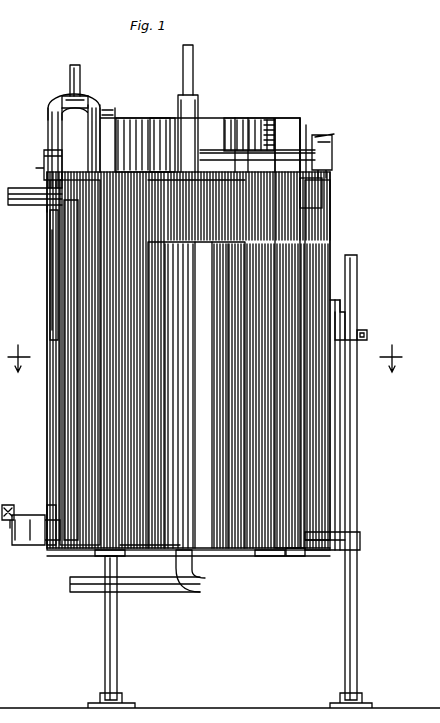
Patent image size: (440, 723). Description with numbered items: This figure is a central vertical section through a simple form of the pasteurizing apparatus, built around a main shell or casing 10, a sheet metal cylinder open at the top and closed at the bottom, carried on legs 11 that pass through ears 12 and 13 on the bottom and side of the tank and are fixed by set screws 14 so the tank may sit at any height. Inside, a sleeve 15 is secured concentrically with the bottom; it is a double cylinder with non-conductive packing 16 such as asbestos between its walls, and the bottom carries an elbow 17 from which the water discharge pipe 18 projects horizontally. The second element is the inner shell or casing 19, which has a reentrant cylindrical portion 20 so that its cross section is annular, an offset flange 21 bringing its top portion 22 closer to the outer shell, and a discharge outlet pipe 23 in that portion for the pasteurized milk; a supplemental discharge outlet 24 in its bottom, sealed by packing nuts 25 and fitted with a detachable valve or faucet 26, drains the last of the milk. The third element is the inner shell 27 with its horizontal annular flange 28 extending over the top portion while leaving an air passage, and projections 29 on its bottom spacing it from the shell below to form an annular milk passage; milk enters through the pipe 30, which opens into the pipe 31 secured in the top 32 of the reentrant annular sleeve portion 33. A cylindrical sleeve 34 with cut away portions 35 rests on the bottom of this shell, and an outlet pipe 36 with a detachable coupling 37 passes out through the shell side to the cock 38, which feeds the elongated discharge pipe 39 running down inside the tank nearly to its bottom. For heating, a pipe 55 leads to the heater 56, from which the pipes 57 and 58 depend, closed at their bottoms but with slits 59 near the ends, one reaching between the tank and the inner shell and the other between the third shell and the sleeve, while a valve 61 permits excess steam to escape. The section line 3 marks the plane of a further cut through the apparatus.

The section line 3- 3 is at (204, 358).
The main shell or casing 10 is at (330, 302).
The legs 11 is at (118, 646).
The ear 12 is at (361, 541).
The ear 13 is at (348, 326).
The set screws 14 is at (368, 336).
The sleeve 15 is at (212, 383).
The non-conductive packing 16 is at (164, 243).
The elbow 17 is at (199, 574).
The water discharge pipe 18 is at (152, 591).
The inner shell or casing 19 is at (70, 397).
The reentrant cylindrical portion 20 is at (182, 216).
The offset flange 21 is at (314, 212).
The top portion 22 is at (312, 189).
The discharge outlet pipe 23 is at (38, 206).
The supplemental discharge outlet 24 is at (50, 547).
The packing nuts 25 is at (48, 505).
The detachable valve or faucet 26 is at (8, 518).
The inner shell 27 is at (312, 398).
The horizontal annular flange 28 is at (45, 161).
The projections 29 is at (265, 551).
The milk inlet pipe 30 is at (194, 78).
The pipe 31 is at (199, 110).
The top 32 is at (175, 168).
The reentrant annular sleeve portion 33 is at (120, 172).
The cylindrical sleeve 34 is at (243, 125).
The cut away portions 35 is at (295, 553).
The outlet pipes 36 is at (247, 134).
The detachable coupling 37 is at (302, 121).
The cock 38 is at (334, 146).
The elongated discharge pipe 39 is at (330, 464).
The pipe 55 is at (77, 88).
The heater 56 is at (68, 97).
The pipe 57 is at (52, 119).
The pipe 58 is at (100, 114).
The slits 59 is at (70, 290).
The valve 61 is at (29, 275).